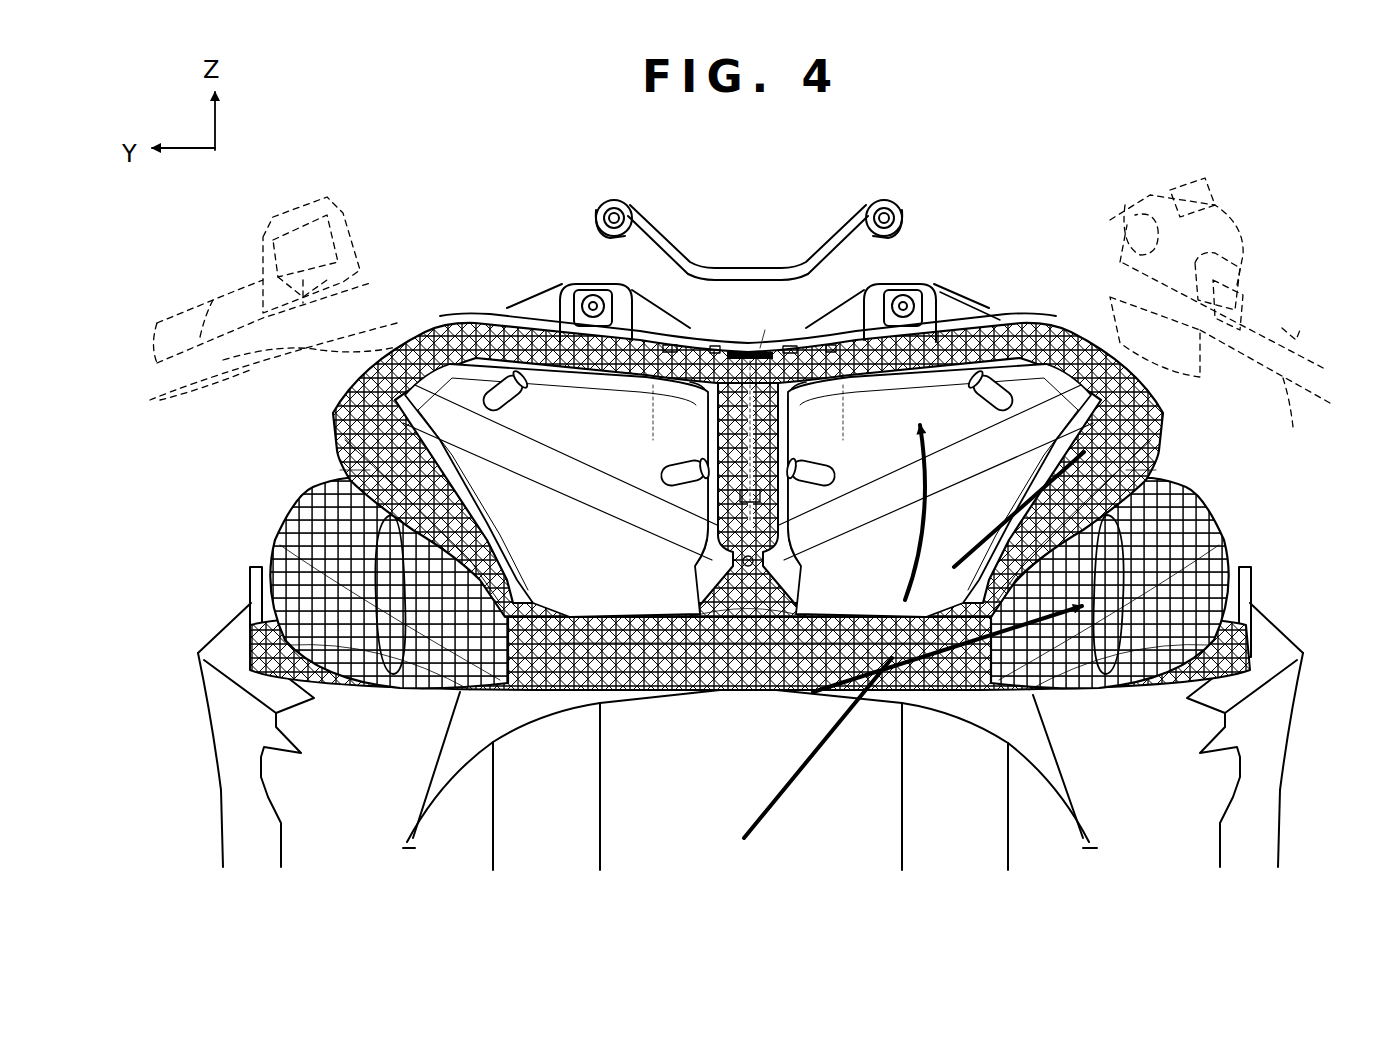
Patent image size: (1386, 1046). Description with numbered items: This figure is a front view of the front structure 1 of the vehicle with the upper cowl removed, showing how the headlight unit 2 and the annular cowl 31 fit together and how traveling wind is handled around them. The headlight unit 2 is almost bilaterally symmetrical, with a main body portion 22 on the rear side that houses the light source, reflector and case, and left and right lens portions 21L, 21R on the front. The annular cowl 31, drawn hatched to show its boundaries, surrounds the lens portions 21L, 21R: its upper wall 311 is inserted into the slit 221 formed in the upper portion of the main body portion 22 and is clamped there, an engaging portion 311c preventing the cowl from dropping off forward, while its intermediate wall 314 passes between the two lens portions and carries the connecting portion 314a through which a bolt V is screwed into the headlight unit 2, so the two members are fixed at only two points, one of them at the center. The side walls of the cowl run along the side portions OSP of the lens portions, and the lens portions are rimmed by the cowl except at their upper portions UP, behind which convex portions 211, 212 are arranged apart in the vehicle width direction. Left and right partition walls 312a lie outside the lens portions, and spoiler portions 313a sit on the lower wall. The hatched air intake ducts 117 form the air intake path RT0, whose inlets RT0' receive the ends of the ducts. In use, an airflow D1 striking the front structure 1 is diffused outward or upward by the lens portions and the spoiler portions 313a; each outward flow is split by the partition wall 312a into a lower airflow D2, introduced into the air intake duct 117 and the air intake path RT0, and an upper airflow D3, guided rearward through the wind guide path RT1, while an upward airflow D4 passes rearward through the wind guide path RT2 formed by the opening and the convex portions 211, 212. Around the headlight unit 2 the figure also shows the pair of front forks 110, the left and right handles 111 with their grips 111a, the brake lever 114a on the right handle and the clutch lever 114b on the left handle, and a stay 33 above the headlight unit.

The front structure 1 is at (555, 216).
The headlight unit 2 is at (936, 280).
The main body portion 22 is at (960, 305).
The lens portion 21R is at (560, 490).
The lens portion 21L is at (936, 490).
The convex portion 211 is at (680, 490).
The convex portion 212 is at (497, 412).
The slit 221 is at (478, 334).
The annular cowl 31 is at (440, 318).
The upper wall 311 is at (722, 352).
The engaging portion 311c is at (770, 348).
The partition wall 312a is at (350, 473).
The spoiler portion 313a is at (622, 692).
The intermediate wall 314 is at (702, 670).
The connecting portion 314a is at (750, 637).
The stay 33 is at (749, 240).
The front fork 110 is at (512, 848).
The handle 111 is at (300, 190).
The grip 111a is at (187, 313).
The brake lever 114a is at (173, 393).
The clutch lever 114b is at (1310, 405).
The air intake duct 117 is at (285, 528).
The side portion OSP is at (342, 462).
The bolt V is at (751, 350).
The upper portion UP is at (618, 478).
The air intake path RT0 is at (749, 722).
The inlet RT0' is at (701, 581).
The wind guide path RT1 is at (333, 428).
The wind guide path RT2 is at (575, 454).
The airflow D1 is at (767, 800).
The airflow D2 is at (960, 698).
The airflow D3 is at (990, 530).
The airflow D4 is at (905, 535).